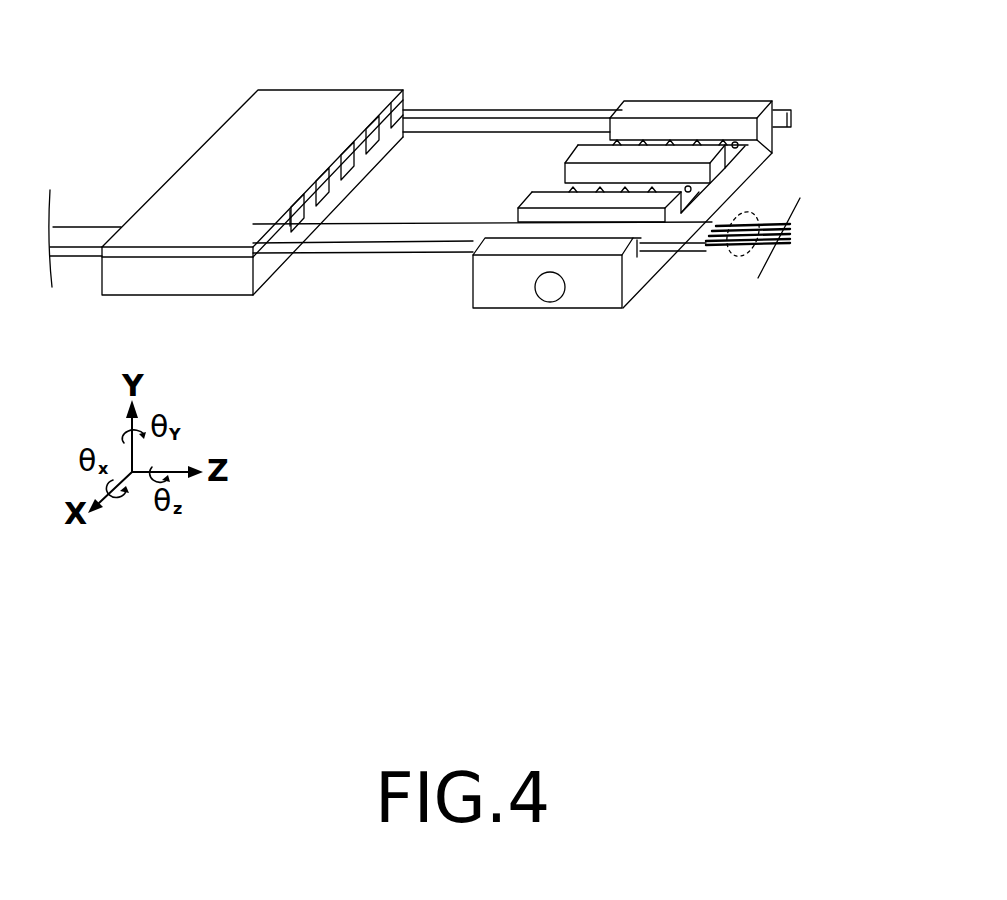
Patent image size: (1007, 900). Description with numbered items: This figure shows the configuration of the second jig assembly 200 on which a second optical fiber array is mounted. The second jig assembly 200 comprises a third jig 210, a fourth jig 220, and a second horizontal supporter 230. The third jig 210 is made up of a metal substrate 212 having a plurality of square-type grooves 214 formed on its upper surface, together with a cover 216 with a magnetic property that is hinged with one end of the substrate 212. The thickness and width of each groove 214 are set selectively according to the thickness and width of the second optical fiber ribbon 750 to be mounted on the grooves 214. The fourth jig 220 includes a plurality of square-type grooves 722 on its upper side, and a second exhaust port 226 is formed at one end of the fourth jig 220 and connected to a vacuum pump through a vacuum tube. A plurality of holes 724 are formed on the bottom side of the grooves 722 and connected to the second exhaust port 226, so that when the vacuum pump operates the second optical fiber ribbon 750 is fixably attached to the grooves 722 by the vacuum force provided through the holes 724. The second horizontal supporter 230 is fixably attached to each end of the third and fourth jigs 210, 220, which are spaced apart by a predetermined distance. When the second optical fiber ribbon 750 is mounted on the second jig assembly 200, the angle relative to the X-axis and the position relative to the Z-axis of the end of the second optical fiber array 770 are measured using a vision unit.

The second jig assembly 200 is at (461, 202).
The third jig 210 is at (271, 189).
The metal substrate 212 is at (177, 283).
The square-type grooves 214 is at (326, 193).
The cover 216 is at (205, 158).
The fourth jig 220 is at (695, 116).
The second exhaust port 226 is at (557, 296).
The second horizontal supporter 230 is at (530, 110).
The square-type grooves 722 is at (740, 148).
The holes 724 is at (757, 150).
The second optical fiber ribbon 750 is at (360, 236).
The second optical fiber array 770 is at (733, 253).